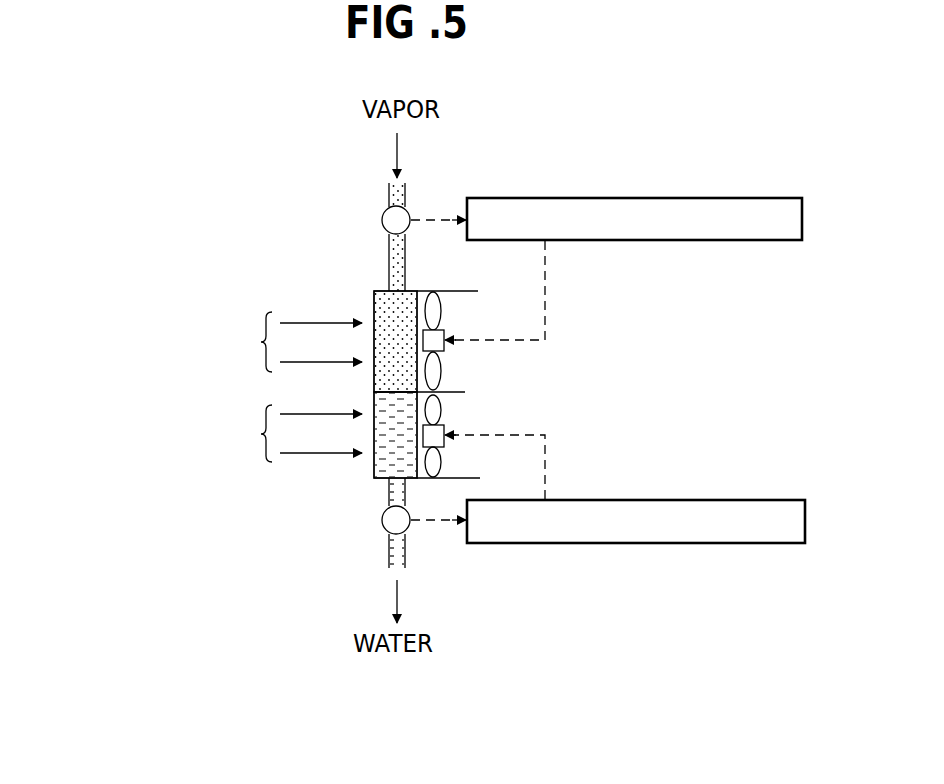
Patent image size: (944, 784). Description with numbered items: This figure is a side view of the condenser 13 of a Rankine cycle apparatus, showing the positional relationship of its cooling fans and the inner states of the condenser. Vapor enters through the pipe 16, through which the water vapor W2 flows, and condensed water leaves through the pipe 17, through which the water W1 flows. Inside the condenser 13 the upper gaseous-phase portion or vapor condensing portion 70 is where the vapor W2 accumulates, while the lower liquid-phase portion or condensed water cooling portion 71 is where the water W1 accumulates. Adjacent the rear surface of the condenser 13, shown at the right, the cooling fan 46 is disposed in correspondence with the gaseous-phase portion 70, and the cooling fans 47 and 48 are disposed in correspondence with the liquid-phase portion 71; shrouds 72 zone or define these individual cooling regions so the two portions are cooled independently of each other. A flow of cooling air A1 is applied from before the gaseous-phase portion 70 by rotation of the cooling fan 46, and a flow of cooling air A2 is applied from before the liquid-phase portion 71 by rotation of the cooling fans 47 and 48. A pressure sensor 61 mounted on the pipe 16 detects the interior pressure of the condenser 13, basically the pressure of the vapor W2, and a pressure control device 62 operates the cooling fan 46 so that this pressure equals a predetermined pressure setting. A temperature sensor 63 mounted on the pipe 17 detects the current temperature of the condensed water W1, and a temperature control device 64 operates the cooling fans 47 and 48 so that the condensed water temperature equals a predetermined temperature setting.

The condenser 13 is at (371, 300).
The pipe 16 is at (389, 197).
The pipe 17 is at (388, 562).
The cooling fan 46 is at (441, 364).
The cooling fan 47 is at (513, 436).
The cooling fan 48 is at (446, 410).
The pressure sensor 61 is at (409, 212).
The pressure control device 62 is at (593, 198).
The temperature sensor 63 is at (402, 524).
The temperature control device 64 is at (582, 543).
The gaseous-phase portion 70 is at (374, 377).
The liquid-phase portion 71 is at (374, 470).
The shrouds 72 is at (452, 291).
The flow of cooling air A1 is at (262, 343).
The flow of cooling air A2 is at (262, 434).
The condensed water W1 is at (385, 486).
The water vapor W2 is at (388, 285).